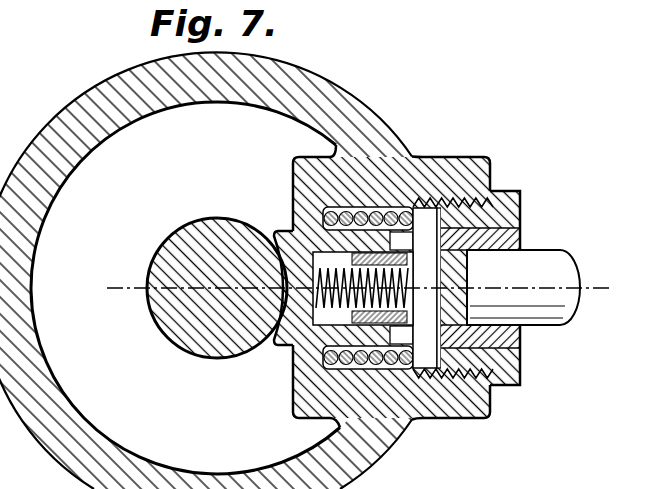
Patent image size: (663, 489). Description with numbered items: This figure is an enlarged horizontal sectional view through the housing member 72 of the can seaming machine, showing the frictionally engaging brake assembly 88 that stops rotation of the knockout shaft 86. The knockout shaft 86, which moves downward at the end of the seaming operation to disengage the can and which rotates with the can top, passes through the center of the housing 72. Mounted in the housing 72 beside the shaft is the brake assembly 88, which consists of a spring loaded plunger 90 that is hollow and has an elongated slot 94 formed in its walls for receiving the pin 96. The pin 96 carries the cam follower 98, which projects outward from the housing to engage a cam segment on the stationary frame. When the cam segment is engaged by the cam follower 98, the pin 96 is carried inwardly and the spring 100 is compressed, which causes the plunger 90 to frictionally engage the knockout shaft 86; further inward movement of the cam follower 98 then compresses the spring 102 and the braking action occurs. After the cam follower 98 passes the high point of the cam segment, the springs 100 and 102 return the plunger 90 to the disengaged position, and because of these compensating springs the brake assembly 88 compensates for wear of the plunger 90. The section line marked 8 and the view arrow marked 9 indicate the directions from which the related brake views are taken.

The housing member 72 is at (398, 134).
The brake assembly 88 is at (468, 148).
The knockout shaft 86 is at (166, 336).
The plunger 90 is at (282, 347).
The spring 100 is at (325, 332).
The spring 102 is at (294, 408).
The elongated slot 94 is at (436, 416).
The pin 96 is at (532, 178).
The cam follower 98 is at (540, 250).
The section line 8- 8 is at (122, 262).
The view arrow 9 is at (617, 331).